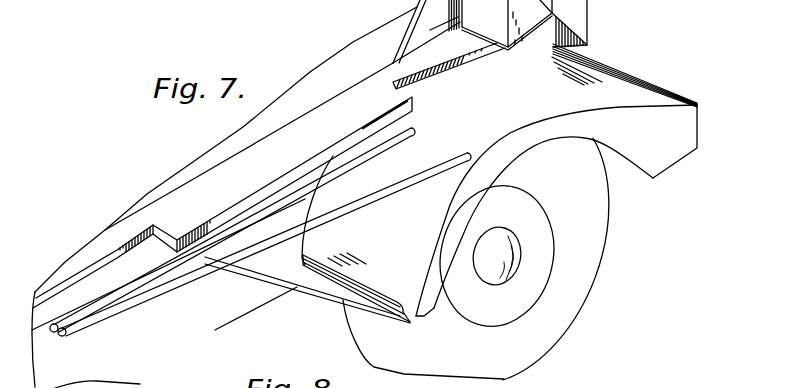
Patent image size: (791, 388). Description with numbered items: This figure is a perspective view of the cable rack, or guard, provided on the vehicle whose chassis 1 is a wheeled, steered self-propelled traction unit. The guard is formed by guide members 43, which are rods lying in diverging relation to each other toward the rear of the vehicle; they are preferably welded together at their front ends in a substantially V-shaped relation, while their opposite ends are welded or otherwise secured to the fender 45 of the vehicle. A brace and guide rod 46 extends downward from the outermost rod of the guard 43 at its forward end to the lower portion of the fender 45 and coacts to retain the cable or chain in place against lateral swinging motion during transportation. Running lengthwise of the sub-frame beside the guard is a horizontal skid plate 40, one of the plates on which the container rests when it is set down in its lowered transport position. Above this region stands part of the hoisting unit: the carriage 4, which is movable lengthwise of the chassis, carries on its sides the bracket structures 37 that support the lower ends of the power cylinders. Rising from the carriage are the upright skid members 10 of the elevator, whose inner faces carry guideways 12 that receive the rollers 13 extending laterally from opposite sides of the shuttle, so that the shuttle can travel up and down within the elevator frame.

In FIG. 7, the carriage 4 is at (406, 0).
In FIG. 7, the upright skid member 10 is at (588, 3).
In FIG. 7, the guideway 12 is at (602, 6).
In FIG. 7, the roller 13 is at (228, 0).
In FIG. 7, the bracket structure 37 is at (587, 45).
In FIG. 7, the horizontal skid plate 40 is at (193, 191).
In FIG. 7, the guide member 43 is at (405, 132).
In FIG. 7, the fender 45 is at (360, 265).
In FIG. 7, the brace and guide rod 46 is at (302, 287).
In FIG. 8, the chassis 1 is at (187, 365).